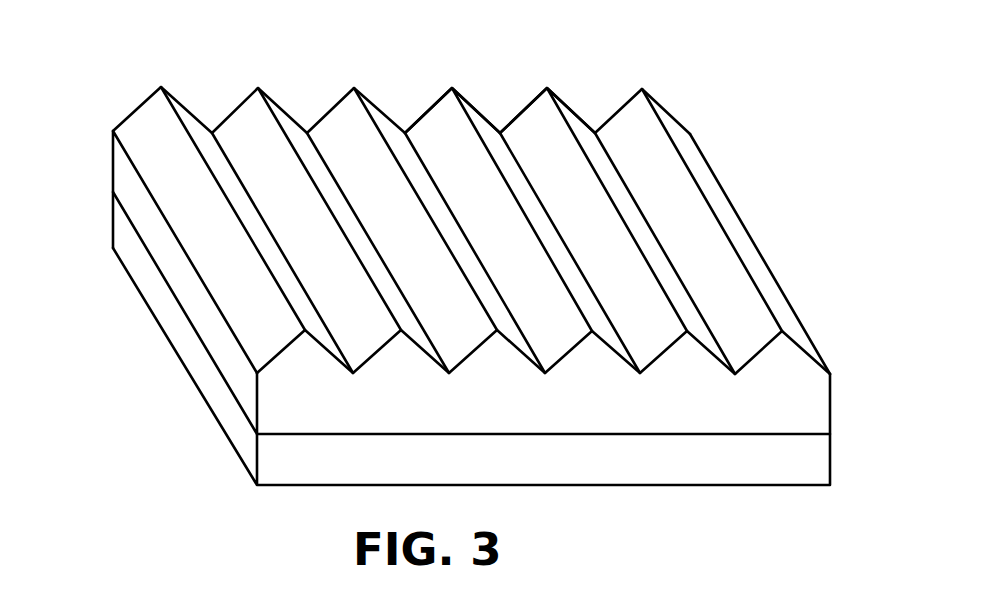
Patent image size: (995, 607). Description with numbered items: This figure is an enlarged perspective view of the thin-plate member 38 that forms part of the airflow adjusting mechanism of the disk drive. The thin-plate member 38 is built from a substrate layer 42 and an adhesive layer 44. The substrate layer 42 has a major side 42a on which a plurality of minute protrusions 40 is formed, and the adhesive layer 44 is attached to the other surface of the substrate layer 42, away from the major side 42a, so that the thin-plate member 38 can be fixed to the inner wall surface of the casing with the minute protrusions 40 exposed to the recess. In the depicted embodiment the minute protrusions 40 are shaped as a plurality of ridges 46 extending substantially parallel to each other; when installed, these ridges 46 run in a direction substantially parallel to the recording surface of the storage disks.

The thin-plate member 38 is at (449, 265).
The minute protrusions 40 is at (450, 123).
The substrate layer 42 is at (439, 229).
The major side 42a is at (213, 258).
The adhesive layer 44 is at (243, 442).
The ridges 46 is at (572, 128).